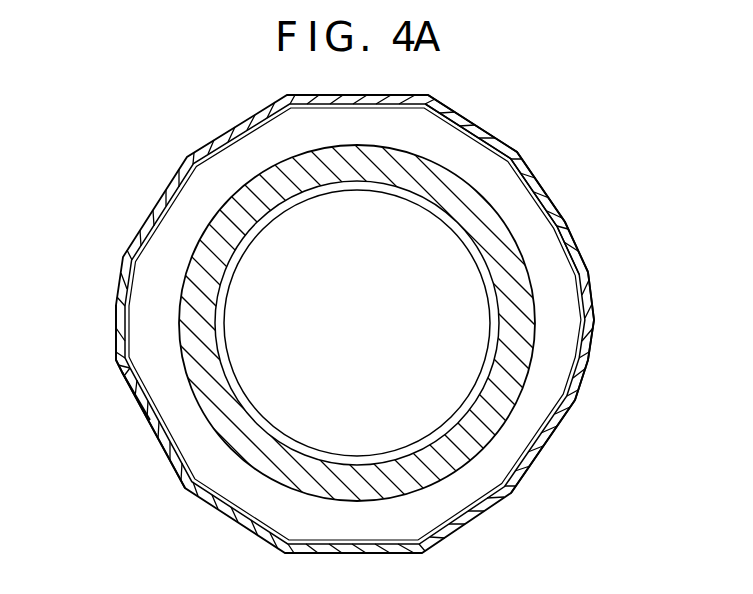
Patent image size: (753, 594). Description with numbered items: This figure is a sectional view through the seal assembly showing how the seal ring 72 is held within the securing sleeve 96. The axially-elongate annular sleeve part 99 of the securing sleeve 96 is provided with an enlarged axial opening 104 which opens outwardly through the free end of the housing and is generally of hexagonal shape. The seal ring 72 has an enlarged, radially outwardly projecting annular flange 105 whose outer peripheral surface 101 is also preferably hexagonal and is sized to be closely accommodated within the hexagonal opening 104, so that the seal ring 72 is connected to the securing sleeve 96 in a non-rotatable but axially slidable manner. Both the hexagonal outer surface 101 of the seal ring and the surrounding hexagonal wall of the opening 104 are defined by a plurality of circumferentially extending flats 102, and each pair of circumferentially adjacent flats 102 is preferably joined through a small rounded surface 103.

The seal ring 72 is at (546, 277).
The securing sleeve 96 is at (171, 180).
The annular sleeve part 99 is at (545, 195).
The outer peripheral surface 101 is at (255, 103).
The flats 102 is at (548, 432).
The rounded surface 103 is at (582, 335).
The axial opening 104 is at (150, 405).
The annular flange 105 is at (478, 156).